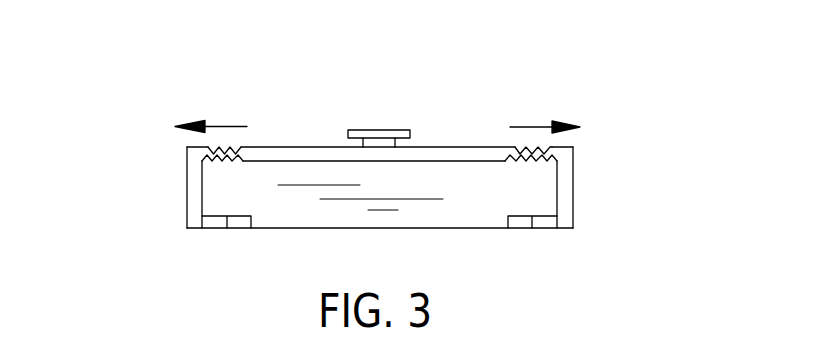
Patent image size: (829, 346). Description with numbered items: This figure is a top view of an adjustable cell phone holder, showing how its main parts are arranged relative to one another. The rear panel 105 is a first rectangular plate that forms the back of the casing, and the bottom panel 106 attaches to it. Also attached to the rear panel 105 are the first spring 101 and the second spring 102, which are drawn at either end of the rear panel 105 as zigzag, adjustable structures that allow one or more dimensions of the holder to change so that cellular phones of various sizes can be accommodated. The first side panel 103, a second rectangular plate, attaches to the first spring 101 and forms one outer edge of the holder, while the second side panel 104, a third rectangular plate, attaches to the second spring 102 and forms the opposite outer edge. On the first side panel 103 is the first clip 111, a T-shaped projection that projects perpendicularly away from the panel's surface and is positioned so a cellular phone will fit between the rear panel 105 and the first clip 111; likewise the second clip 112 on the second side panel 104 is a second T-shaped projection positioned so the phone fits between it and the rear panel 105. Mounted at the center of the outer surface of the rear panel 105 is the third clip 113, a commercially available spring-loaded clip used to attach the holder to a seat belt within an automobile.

The first spring 101 is at (230, 148).
The second spring 102 is at (525, 147).
The first side panel 103 is at (187, 192).
The second side panel 104 is at (573, 187).
The rear panel 105 is at (298, 147).
The bottom panel 106 is at (397, 203).
The first clip 111 is at (235, 228).
The second clip 112 is at (532, 228).
The third clip 113 is at (385, 130).